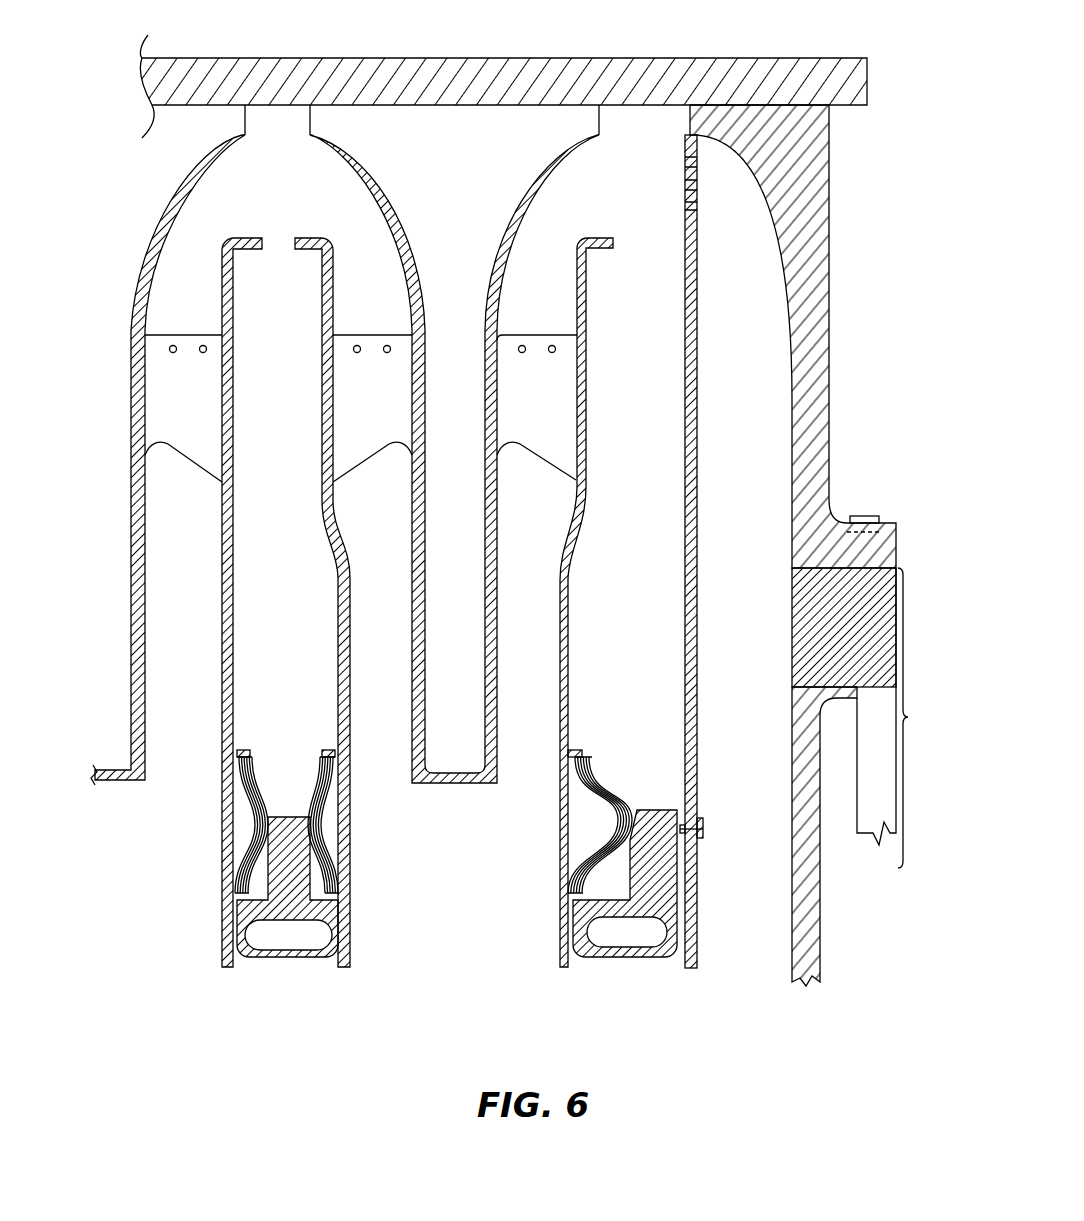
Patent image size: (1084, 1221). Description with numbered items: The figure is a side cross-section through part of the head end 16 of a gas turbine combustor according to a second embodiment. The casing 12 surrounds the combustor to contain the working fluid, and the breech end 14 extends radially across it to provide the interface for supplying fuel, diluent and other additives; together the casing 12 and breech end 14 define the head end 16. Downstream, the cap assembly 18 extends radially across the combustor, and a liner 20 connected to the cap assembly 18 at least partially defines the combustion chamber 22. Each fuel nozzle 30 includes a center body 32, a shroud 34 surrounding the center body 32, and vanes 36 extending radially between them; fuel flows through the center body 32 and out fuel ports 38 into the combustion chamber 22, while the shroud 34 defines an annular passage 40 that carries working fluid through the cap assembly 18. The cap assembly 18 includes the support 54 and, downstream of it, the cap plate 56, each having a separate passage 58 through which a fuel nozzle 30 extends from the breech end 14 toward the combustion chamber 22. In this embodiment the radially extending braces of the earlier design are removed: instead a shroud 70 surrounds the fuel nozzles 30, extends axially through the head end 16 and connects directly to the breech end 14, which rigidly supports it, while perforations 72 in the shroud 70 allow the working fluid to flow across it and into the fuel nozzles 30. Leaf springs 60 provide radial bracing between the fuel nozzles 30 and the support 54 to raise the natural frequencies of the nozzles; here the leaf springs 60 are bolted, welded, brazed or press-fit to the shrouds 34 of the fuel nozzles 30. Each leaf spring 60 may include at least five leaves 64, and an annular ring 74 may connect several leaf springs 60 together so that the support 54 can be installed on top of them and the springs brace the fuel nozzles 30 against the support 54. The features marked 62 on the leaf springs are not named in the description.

The casing 12 is at (829, 328).
The breech end 14 is at (786, 58).
The head end 16 is at (880, 455).
The cap assembly 18 is at (895, 718).
The liner 20 is at (697, 885).
The combustion chamber 22 is at (461, 939).
The fuel nozzle 30 is at (540, 235).
The center body 32 is at (131, 335).
The shroud 34 is at (322, 293).
The vanes 36 is at (169, 421).
The fuel ports 38 is at (203, 353).
The annular passage 40 is at (372, 507).
The support 54 is at (283, 920).
The cap plate 56 is at (245, 957).
The passage 58 is at (235, 968).
The leaf spring 60 is at (243, 838).
The lamination ends 62 is at (330, 757).
The leaves 64 is at (252, 826).
The shroud 70 is at (685, 700).
The perforations 72 is at (697, 160).
The annular ring 74 is at (335, 752).